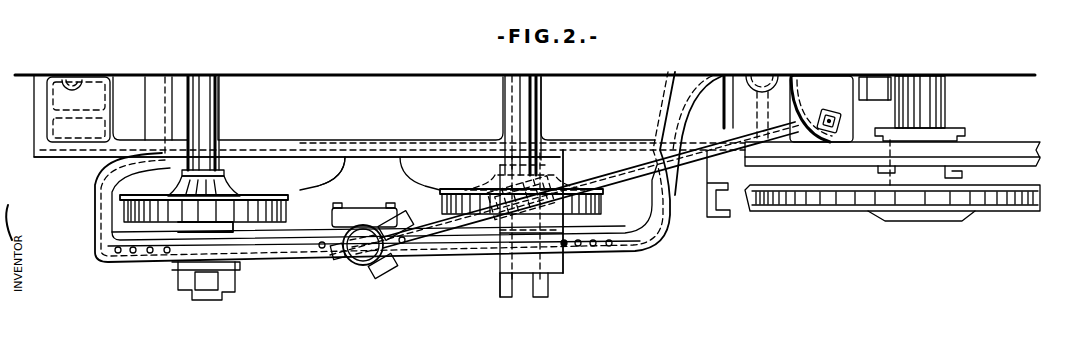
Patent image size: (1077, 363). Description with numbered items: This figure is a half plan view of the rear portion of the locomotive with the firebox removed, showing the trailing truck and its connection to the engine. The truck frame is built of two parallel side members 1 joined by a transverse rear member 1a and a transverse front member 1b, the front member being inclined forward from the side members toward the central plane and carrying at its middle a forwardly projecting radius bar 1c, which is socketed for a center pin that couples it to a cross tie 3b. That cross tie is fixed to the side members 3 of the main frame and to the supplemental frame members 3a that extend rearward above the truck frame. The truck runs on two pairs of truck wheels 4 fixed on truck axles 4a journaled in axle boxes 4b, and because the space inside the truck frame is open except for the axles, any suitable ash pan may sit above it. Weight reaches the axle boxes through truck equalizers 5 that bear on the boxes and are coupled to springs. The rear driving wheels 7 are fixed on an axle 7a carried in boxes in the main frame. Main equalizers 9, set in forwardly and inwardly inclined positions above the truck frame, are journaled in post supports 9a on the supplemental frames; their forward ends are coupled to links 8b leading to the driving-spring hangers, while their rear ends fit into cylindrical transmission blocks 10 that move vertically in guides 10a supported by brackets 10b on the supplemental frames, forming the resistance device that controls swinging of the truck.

The side member 1 is at (275, 250).
The transverse rear member 1a is at (157, 96).
The transverse front member 1b is at (660, 208).
The radius bar 1c is at (710, 80).
The side member of main frame 3 is at (1006, 150).
The supplemental frame member 3a is at (448, 143).
The cross tie 3b is at (826, 76).
The truck wheel 4 is at (258, 206).
The truck axle 4a is at (214, 105).
The axle box 4b is at (185, 293).
The truck equalizer 5 is at (444, 258).
The rear driving wheel 7 is at (860, 210).
The driving axle 7a is at (922, 92).
The link 8b is at (820, 115).
The main equalizer 9 is at (612, 178).
The post support 9a is at (555, 166).
The transmission block 10 is at (386, 263).
The guide 10a is at (355, 265).
The bracket 10b is at (358, 163).